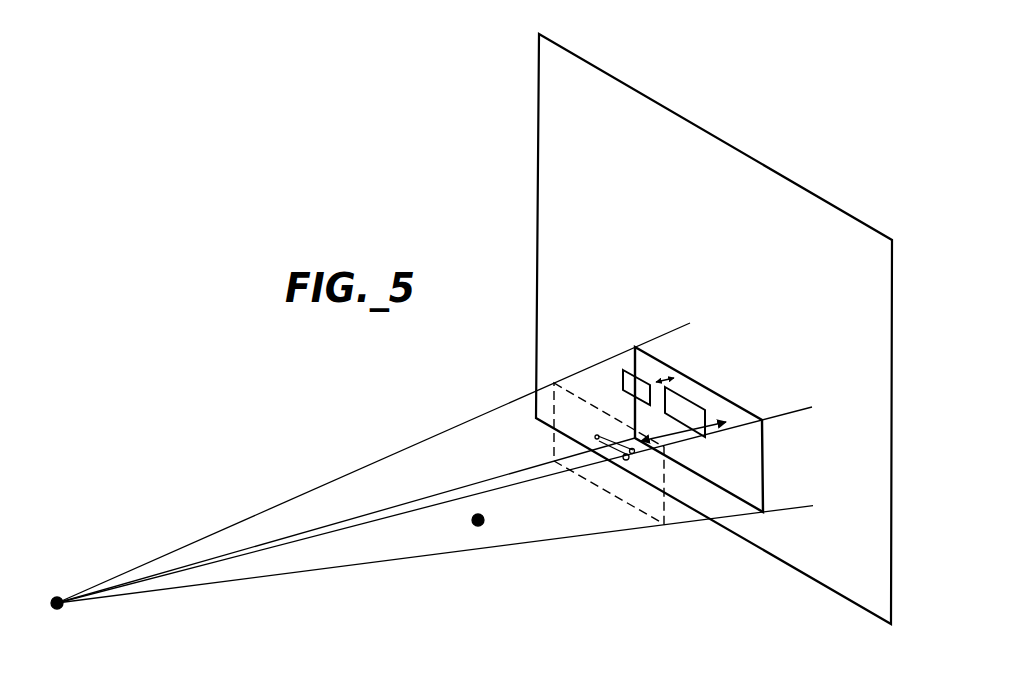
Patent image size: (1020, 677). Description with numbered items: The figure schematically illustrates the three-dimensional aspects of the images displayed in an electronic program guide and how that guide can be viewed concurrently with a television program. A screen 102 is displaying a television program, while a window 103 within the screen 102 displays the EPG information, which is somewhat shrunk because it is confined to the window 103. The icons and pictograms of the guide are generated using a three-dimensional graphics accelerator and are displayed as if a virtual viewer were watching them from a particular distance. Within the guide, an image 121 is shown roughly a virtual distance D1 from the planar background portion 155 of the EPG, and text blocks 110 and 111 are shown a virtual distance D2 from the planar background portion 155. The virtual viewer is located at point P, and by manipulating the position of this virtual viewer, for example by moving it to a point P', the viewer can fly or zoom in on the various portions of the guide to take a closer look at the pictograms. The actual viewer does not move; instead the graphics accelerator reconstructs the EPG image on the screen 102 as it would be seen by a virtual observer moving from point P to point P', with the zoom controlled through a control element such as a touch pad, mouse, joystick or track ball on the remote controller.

The screen 102 is at (769, 185).
The window 103 is at (754, 485).
The text block 110 is at (623, 380).
The text block 111 is at (694, 400).
The image 121 is at (595, 447).
The planar background portion 155 is at (752, 448).
The virtual distance D1 is at (672, 443).
The virtual distance D2 is at (664, 379).
The point P is at (432, 487).
The point P' is at (447, 567).